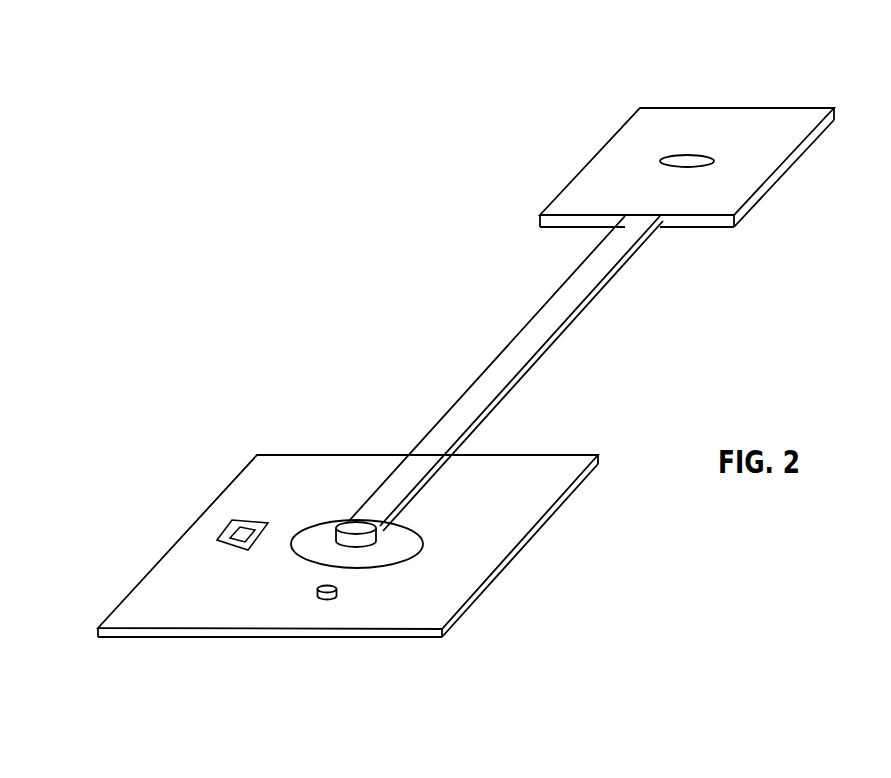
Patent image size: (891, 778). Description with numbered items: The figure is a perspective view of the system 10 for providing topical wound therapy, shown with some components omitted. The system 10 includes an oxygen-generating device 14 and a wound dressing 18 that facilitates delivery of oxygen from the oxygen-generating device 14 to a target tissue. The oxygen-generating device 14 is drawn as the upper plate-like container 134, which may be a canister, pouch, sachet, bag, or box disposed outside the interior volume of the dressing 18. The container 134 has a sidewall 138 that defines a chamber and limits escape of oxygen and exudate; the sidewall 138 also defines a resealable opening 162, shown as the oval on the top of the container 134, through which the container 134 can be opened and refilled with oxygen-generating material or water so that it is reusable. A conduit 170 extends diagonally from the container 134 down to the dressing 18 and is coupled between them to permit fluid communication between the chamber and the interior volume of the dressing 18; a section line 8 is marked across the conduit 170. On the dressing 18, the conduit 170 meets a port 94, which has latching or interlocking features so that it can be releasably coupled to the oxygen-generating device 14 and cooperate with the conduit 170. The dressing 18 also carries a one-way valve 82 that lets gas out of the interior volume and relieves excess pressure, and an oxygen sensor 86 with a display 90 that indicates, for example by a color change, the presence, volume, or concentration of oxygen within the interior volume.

The system for providing topical wound therapy 10 is at (177, 182).
The oxygen-generating device 14 is at (702, 158).
The wound dressing 18 is at (247, 445).
The valve 82 is at (320, 599).
The oxygen sensor 86 is at (230, 526).
The display 90 is at (222, 540).
The port 94 is at (346, 517).
The container 134 is at (800, 108).
The sidewall 138 is at (767, 162).
The resealable opening 162 is at (697, 167).
The conduit 170 is at (457, 398).
The section line 8- 8 is at (562, 365).